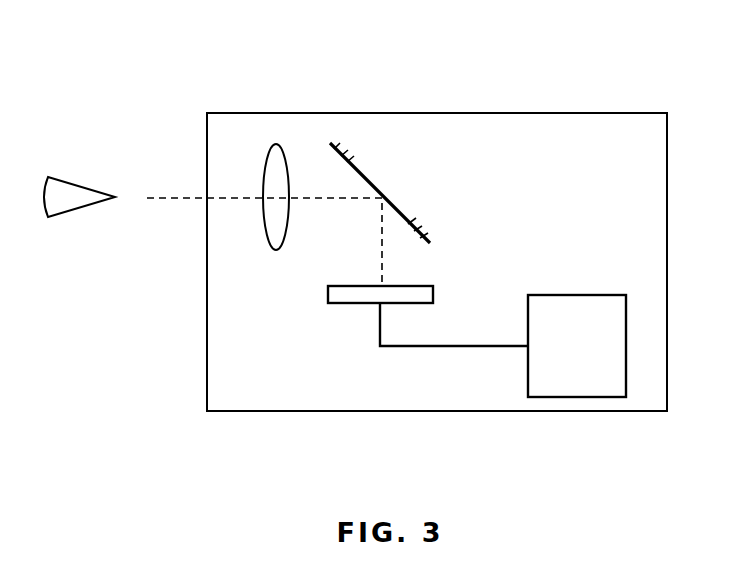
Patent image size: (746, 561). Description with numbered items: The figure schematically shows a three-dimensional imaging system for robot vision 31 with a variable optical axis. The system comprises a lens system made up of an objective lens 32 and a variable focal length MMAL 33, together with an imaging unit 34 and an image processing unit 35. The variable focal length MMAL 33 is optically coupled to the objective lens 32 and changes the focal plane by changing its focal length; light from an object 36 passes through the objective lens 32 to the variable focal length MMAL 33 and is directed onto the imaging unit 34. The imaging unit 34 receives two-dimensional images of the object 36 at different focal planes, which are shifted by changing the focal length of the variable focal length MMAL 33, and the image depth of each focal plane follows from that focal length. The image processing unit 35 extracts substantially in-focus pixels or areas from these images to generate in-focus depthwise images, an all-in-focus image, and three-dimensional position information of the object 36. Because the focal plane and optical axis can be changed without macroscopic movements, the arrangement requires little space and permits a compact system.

The three-dimensional imaging system for robot vision 31 is at (628, 108).
The objective lens 32 is at (262, 189).
The variable focal length MMAL 33 is at (370, 175).
The imaging unit 34 is at (372, 308).
The image processing unit 35 is at (552, 397).
The object 36 is at (75, 210).